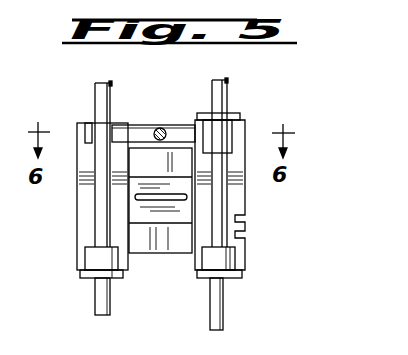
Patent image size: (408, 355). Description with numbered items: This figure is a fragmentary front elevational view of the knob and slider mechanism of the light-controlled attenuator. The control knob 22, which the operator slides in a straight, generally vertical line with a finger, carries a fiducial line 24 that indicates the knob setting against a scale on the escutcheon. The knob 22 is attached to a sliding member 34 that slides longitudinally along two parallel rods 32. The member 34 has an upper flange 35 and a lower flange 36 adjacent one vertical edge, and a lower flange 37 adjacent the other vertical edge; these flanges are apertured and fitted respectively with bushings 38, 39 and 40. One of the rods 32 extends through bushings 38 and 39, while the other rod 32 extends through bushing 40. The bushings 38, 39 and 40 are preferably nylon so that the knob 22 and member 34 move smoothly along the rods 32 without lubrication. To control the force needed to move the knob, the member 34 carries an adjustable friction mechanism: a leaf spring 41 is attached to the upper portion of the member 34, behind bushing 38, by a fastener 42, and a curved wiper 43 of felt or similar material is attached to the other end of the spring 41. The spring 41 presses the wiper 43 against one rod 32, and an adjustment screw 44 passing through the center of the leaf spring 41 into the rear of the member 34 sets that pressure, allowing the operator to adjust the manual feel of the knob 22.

The control knob 22 is at (163, 237).
The fiducial line 24 is at (135, 197).
The rods 32 is at (95, 310).
The sliding member 34 is at (85, 229).
The upper flange 35 is at (240, 121).
The lower flange 36 is at (243, 274).
The lower flange 37 is at (85, 270).
The bushing 38 is at (206, 132).
The bushing 39 is at (236, 258).
The bushing 40 is at (113, 280).
The leaf spring 41 is at (139, 134).
The fastener 42 is at (232, 118).
The curved wiper 43 is at (88, 124).
The adjustment screw 44 is at (158, 129).